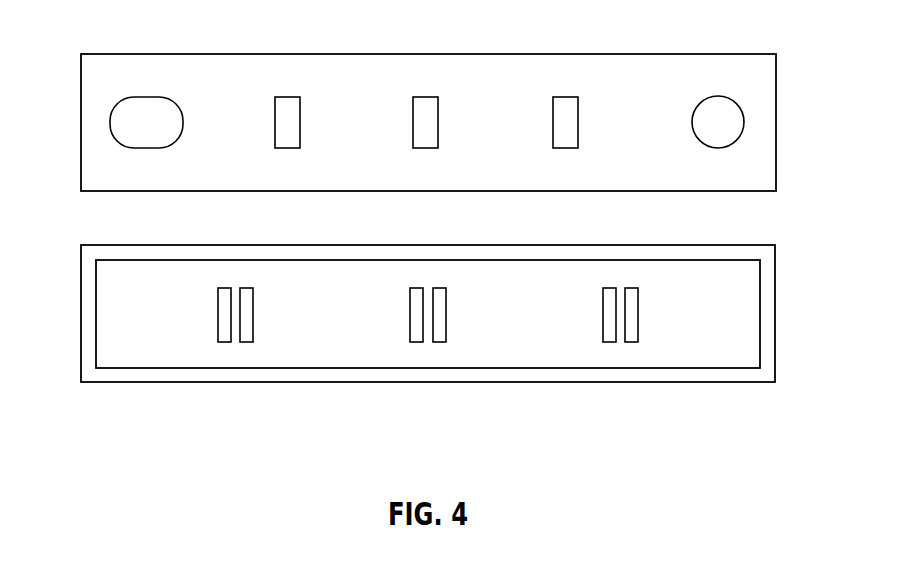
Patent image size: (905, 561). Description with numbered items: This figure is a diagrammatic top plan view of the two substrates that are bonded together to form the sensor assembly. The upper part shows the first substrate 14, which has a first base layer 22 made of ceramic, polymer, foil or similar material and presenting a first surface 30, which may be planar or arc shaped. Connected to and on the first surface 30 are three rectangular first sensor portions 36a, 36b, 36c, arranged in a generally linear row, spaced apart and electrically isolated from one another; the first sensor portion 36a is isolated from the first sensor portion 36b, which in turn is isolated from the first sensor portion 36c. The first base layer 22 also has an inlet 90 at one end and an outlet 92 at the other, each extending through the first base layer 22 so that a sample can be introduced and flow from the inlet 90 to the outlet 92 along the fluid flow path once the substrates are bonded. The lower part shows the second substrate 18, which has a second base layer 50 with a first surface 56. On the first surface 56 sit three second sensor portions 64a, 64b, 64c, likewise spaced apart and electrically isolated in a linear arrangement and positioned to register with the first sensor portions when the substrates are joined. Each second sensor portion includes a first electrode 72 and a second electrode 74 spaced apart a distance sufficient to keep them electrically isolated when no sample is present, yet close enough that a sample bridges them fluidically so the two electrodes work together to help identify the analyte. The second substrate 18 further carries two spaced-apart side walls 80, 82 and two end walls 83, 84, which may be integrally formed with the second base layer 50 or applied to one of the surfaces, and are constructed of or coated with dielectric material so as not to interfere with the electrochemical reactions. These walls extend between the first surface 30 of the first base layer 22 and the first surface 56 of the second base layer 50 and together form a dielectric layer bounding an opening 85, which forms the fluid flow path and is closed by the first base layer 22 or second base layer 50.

The first substrate 14 is at (457, 53).
The first base layer 22 is at (543, 77).
The first surface 30 is at (227, 78).
The first sensor portion 36a is at (300, 123).
The first sensor portion 36b is at (438, 123).
The first sensor portion 36c is at (578, 123).
The inlet 90 is at (110, 122).
The outlet 92 is at (745, 122).
The second substrate 18 is at (567, 245).
The second base layer 50 is at (672, 280).
The first surface 56 is at (473, 278).
The second sensor portion 64a is at (213, 302).
The second sensor portion 64b is at (408, 302).
The second sensor portion 64c is at (600, 302).
The first electrode 72 is at (223, 342).
The second electrode 74 is at (246, 342).
The side wall 80 is at (274, 263).
The side wall 82 is at (318, 365).
The end wall 83 is at (98, 312).
The end wall 84 is at (758, 306).
The opening 85 is at (707, 340).